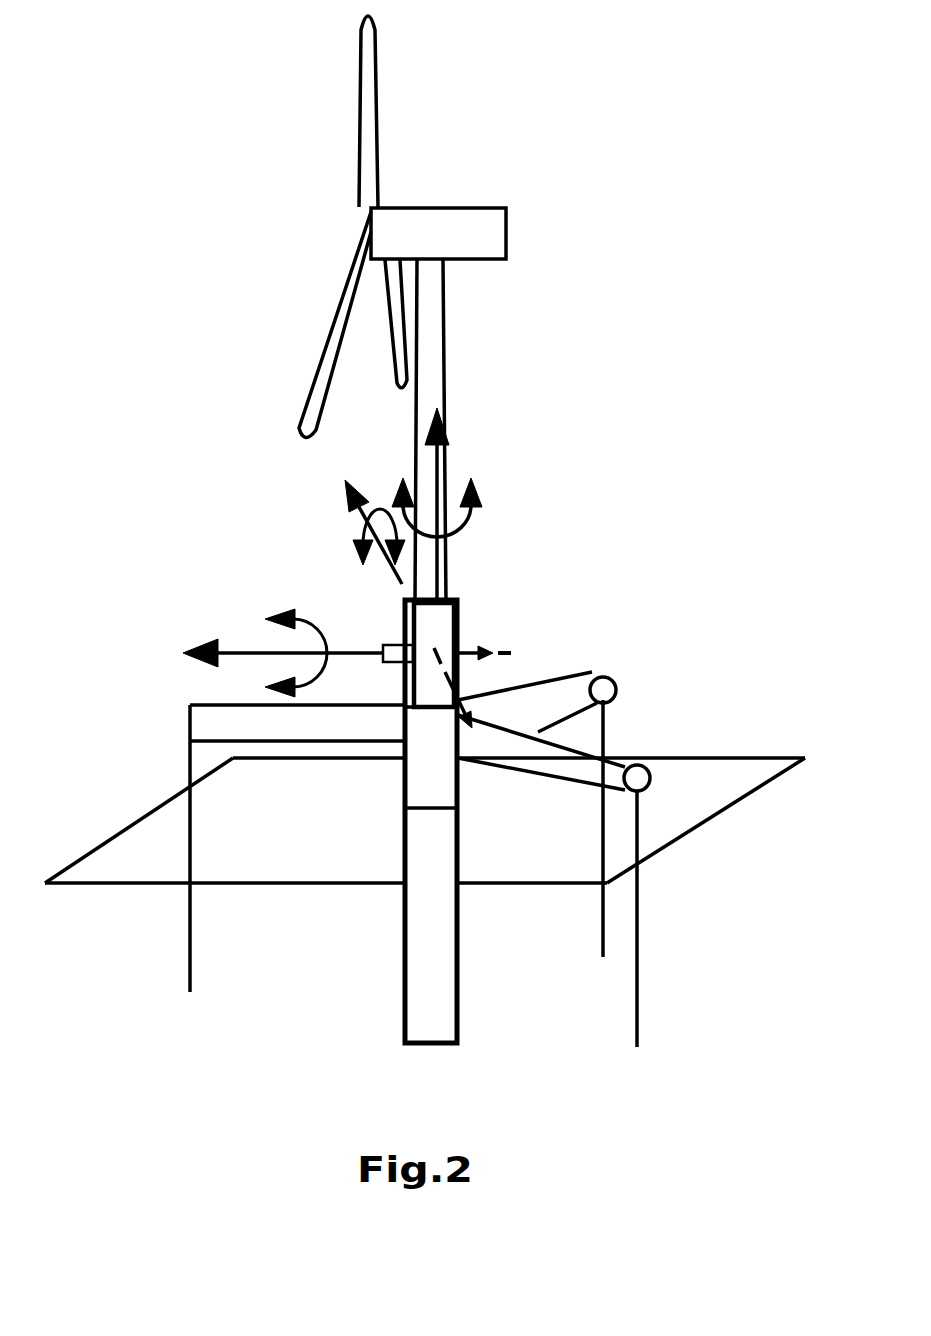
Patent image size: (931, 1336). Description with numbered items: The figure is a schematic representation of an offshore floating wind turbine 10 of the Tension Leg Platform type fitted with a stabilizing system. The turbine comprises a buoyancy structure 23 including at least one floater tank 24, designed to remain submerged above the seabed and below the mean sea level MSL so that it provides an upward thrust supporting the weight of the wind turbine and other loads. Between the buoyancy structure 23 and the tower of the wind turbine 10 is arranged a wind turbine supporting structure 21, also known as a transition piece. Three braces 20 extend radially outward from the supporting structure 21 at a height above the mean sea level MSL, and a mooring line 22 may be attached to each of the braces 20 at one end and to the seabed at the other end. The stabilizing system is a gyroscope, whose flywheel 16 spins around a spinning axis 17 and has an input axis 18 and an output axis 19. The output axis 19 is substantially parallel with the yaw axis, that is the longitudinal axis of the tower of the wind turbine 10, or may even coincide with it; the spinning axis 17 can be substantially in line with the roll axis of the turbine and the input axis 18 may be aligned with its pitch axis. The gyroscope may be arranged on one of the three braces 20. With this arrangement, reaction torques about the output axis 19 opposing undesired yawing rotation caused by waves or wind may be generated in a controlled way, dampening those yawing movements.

The wind turbine 10 is at (432, 357).
The flywheel 16 is at (438, 632).
The spinning axis 17 is at (243, 650).
The input axis 18 is at (396, 585).
The output axis 19 is at (447, 467).
The braces 20 is at (205, 725).
The wind turbine supporting structure 21 is at (422, 767).
The mooring line 22 is at (186, 946).
The buoyancy structure 23 is at (472, 597).
The floater tank 24 is at (430, 1010).
The mean sea level MSL is at (718, 752).